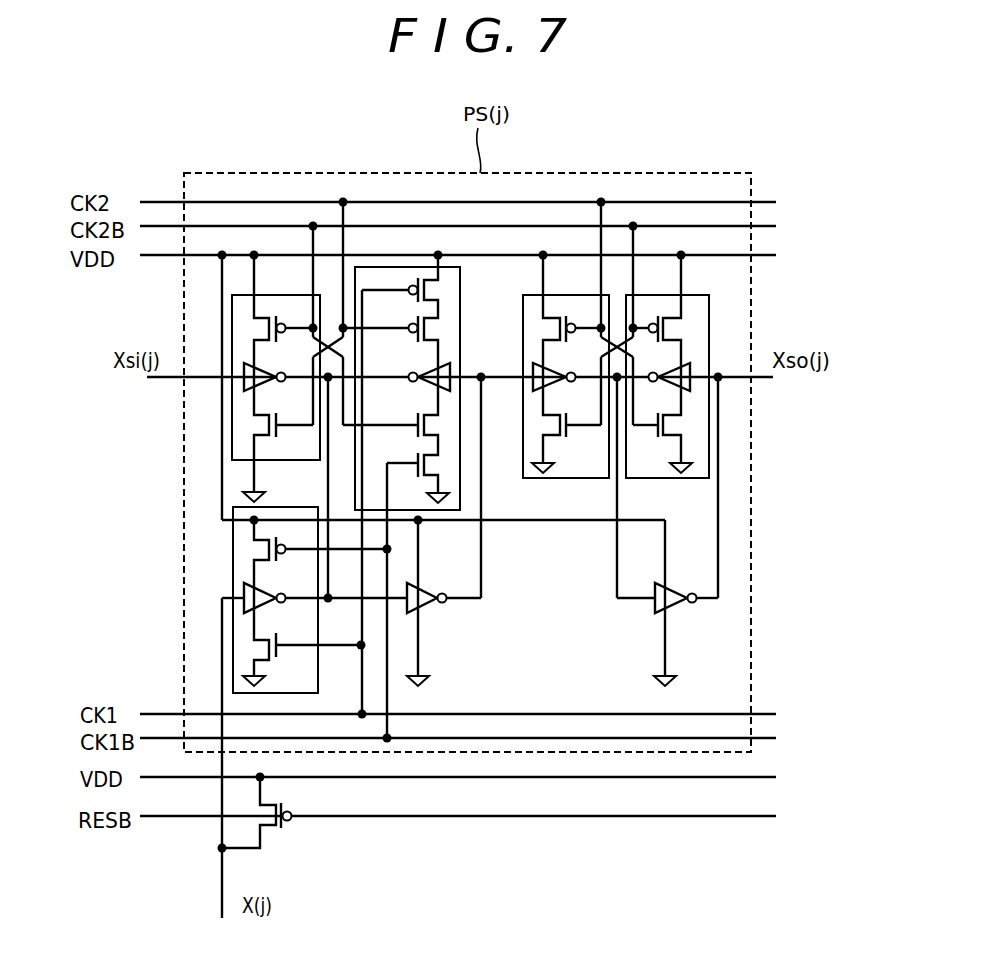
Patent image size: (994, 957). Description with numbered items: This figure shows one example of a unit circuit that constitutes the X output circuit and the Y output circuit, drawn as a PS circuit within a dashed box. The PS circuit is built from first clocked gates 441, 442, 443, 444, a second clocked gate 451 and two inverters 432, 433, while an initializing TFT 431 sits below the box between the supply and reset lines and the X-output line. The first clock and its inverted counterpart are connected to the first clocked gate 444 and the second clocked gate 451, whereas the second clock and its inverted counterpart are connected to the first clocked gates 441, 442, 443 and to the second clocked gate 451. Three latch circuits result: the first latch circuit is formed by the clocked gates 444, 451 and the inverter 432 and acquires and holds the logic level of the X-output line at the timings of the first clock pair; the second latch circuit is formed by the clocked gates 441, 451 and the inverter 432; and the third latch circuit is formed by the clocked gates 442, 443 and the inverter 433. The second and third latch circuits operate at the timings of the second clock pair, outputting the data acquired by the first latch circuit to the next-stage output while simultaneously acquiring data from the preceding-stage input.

The first clocked gate 441 is at (280, 295).
The second clocked gate 451 is at (388, 267).
The first clocked gate 442 is at (567, 295).
The first clocked gate 443 is at (655, 295).
The first clocked gate 444 is at (233, 550).
The inverter 432 is at (425, 607).
The inverter 433 is at (655, 607).
The TFT 431 is at (288, 822).